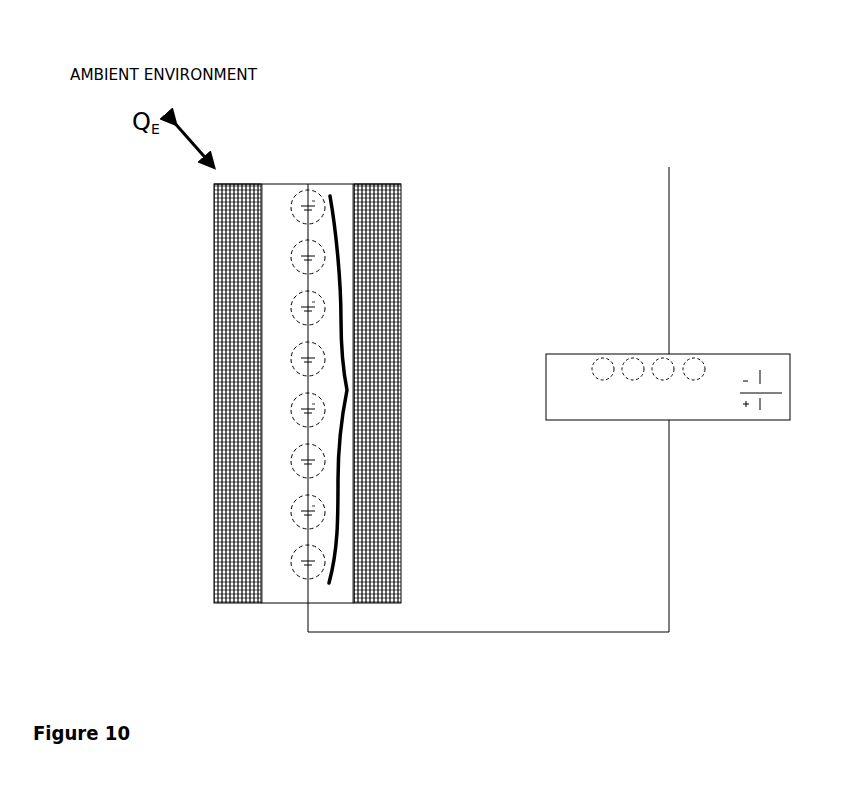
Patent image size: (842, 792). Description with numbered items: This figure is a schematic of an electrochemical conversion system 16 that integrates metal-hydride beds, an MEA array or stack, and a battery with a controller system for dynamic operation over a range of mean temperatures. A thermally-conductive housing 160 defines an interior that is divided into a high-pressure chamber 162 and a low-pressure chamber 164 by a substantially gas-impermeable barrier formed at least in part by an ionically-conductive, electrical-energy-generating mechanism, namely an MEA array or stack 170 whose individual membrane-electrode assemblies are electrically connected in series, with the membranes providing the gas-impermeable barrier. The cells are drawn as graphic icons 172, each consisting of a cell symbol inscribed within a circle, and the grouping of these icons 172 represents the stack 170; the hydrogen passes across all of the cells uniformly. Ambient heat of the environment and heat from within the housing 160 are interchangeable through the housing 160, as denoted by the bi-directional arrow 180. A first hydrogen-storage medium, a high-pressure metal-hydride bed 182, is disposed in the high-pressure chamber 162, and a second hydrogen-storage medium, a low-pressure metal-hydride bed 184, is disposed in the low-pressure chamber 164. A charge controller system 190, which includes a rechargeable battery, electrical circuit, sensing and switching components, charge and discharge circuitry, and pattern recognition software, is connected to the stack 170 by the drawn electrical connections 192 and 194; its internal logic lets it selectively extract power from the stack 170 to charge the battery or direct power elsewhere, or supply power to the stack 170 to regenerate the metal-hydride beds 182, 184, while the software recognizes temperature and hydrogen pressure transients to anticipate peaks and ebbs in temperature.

The electrochemical conversion system 16 is at (601, 34).
The thermally-conductive housing 160 is at (270, 604).
The high-pressure chamber 162 is at (343, 597).
The low-pressure chamber 164 is at (270, 536).
The MEA array or stack 170 is at (346, 390).
The MEA cell icon 172 is at (293, 197).
The bi-directional arrow 180 is at (183, 143).
The high-pressure metal-hydride bed 182 is at (380, 527).
The low-pressure metal-hydride bed 184 is at (227, 378).
The charge controller system 190 is at (668, 405).
The connection wire 192 is at (488, 527).
The connection wire 194 is at (588, 250).